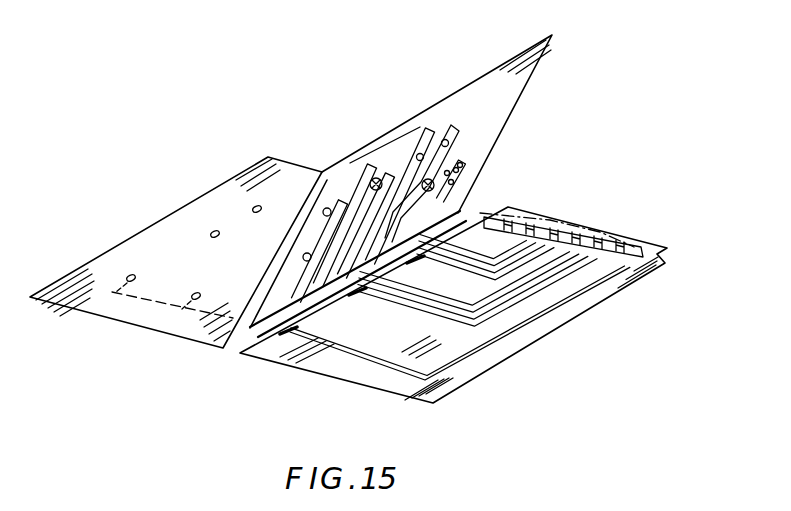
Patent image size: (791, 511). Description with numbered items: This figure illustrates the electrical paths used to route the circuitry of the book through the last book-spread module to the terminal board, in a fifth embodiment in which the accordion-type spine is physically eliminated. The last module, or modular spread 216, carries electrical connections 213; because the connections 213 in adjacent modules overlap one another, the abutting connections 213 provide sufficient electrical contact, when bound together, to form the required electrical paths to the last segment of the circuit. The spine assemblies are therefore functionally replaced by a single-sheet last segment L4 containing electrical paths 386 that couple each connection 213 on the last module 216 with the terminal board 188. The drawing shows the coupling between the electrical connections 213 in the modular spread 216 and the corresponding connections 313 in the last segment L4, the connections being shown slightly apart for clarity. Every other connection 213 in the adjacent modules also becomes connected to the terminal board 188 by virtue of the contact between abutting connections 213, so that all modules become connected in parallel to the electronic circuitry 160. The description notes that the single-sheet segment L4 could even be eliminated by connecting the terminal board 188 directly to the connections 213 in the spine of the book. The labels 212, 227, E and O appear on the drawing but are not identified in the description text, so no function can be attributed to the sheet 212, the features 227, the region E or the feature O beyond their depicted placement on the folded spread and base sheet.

The flexible substrate sheet 212 is at (160, 328).
The last module 216 is at (523, 96).
The apertures 227 is at (195, 292).
The connections 213 is at (499, 189).
The connections in the last segment 313 is at (296, 325).
The electronic circuitry 160 is at (633, 239).
The terminal board 188 is at (575, 222).
The electrical paths 386 is at (453, 362).
The end portion E is at (198, 212).
The opening O is at (480, 96).
The single-sheet last segment L4 is at (592, 307).